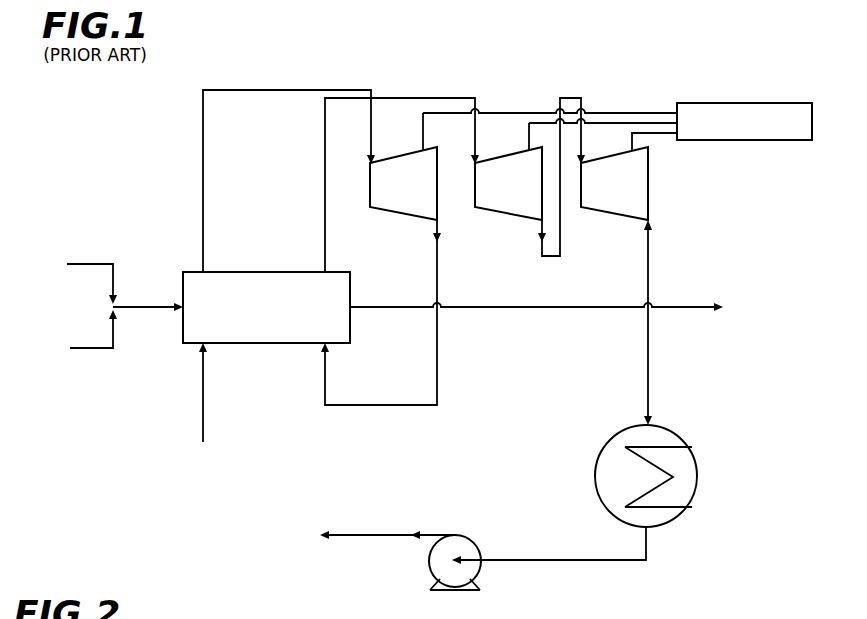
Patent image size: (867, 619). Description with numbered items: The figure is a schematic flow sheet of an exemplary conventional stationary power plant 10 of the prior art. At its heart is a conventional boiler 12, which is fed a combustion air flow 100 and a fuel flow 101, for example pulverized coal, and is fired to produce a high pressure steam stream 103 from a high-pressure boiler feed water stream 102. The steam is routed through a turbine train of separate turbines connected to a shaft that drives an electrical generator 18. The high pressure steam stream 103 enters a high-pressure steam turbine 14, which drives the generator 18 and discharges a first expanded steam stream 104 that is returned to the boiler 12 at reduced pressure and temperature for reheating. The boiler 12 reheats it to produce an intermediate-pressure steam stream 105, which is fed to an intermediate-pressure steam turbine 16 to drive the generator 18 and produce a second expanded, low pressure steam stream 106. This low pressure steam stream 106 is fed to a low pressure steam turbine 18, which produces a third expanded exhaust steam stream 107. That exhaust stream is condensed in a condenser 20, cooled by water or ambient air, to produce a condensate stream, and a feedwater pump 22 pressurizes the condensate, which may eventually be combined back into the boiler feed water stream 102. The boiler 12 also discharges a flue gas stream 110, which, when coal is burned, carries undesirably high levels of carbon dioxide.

The stationary power plant 10 is at (755, 237).
The boiler 12 is at (196, 272).
The high-pressure steam turbine 14 is at (380, 202).
The intermediate-pressure steam turbine 16 is at (496, 202).
The electrical generator / low pressure steam turbine 18 is at (607, 203).
The condenser 20 is at (665, 515).
The feedwater pump 22 is at (470, 573).
The combustion air flow 100 is at (68, 272).
The fuel flow 101 is at (65, 341).
The high-pressure boiler feed water stream 102 is at (202, 419).
The high pressure steam stream 103 is at (235, 171).
The first expanded steam stream 104 is at (381, 324).
The intermediate-pressure steam stream 105 is at (385, 148).
The low pressure steam stream 106 is at (566, 152).
The exhaust steam stream 107 is at (664, 327).
The flue gas stream 110 is at (579, 313).